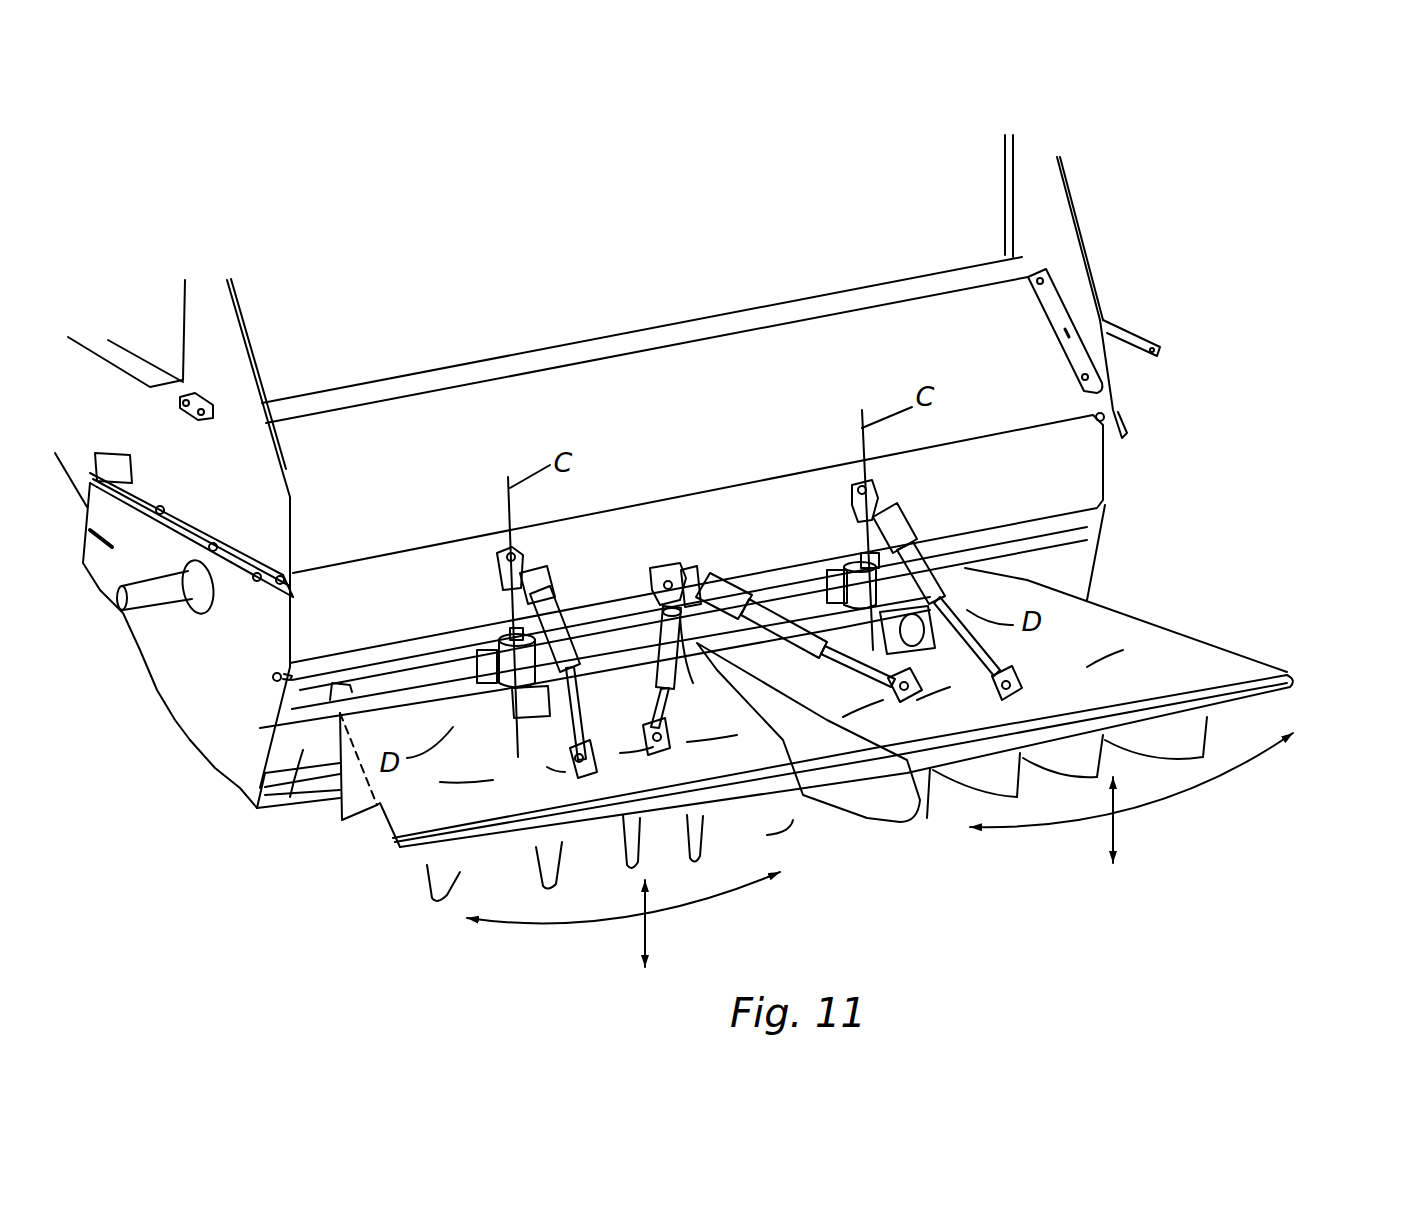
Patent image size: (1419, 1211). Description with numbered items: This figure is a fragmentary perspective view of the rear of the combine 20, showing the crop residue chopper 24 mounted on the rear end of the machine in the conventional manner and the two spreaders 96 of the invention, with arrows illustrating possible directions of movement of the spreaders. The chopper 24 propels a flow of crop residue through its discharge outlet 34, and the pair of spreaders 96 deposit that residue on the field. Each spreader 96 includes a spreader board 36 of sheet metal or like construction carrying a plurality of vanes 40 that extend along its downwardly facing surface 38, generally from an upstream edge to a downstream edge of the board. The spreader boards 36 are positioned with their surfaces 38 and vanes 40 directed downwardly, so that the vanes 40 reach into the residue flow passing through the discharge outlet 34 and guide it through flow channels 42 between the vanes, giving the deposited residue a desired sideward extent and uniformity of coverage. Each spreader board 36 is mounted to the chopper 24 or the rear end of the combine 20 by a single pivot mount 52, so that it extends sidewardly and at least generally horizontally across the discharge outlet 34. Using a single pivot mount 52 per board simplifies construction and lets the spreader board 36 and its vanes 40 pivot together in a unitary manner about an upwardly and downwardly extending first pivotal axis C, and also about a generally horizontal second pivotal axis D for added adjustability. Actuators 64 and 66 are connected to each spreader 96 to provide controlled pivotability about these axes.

The combine 20 is at (1172, 254).
The crop residue chopper 24 is at (1110, 473).
The discharge outlet 34 is at (273, 813).
The spreader board 36 is at (390, 845).
The downwardly facing surface 38 is at (800, 792).
The vanes 40 is at (537, 883).
The flow channels 42 is at (493, 863).
The pivot mount 52 is at (497, 643).
The actuator 64 is at (555, 626).
The actuator 66 is at (655, 665).
The spreader 96 is at (373, 807).